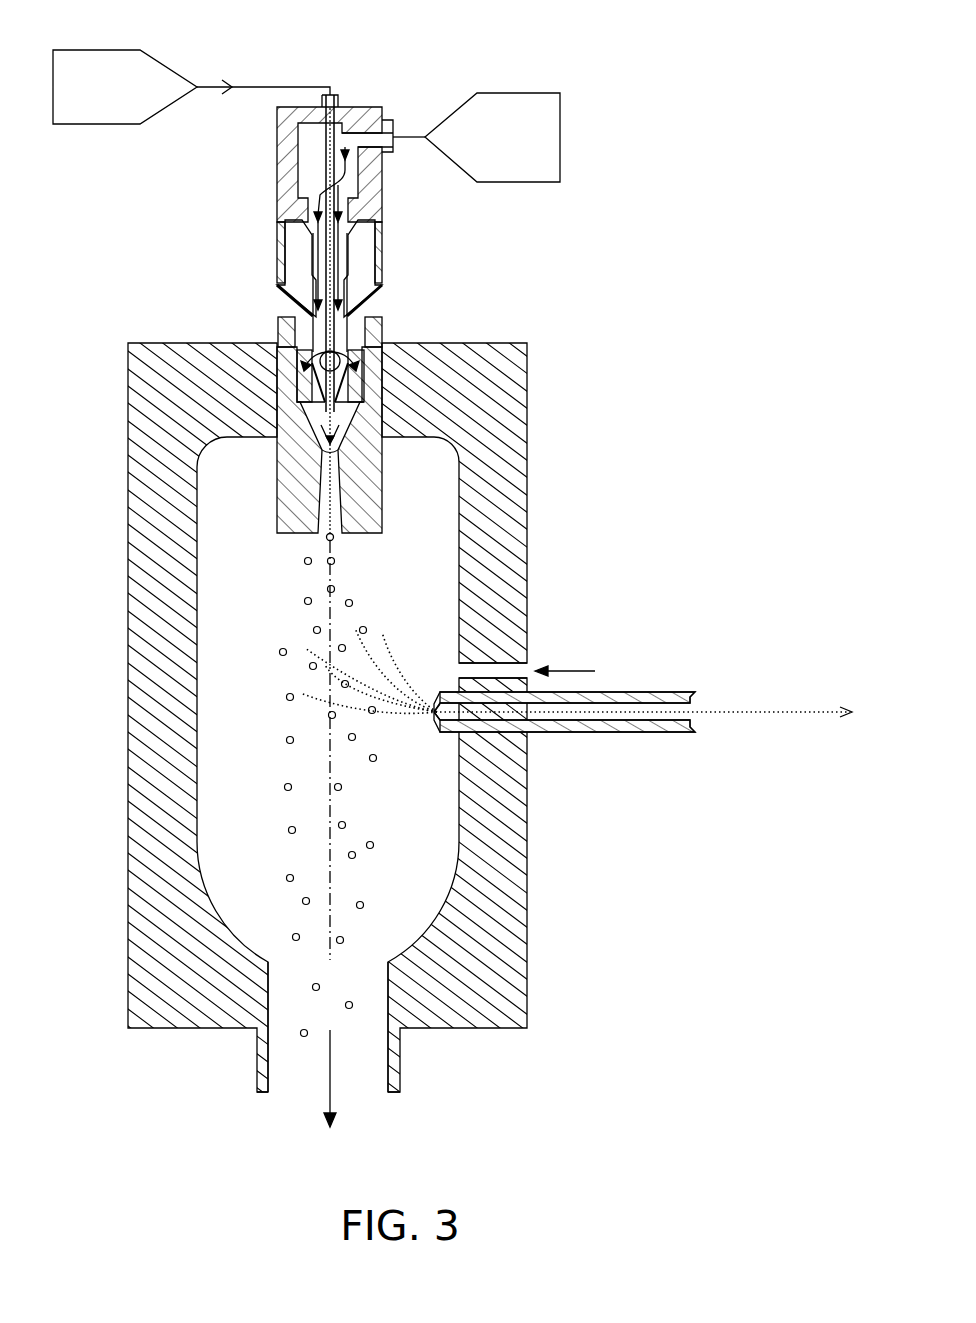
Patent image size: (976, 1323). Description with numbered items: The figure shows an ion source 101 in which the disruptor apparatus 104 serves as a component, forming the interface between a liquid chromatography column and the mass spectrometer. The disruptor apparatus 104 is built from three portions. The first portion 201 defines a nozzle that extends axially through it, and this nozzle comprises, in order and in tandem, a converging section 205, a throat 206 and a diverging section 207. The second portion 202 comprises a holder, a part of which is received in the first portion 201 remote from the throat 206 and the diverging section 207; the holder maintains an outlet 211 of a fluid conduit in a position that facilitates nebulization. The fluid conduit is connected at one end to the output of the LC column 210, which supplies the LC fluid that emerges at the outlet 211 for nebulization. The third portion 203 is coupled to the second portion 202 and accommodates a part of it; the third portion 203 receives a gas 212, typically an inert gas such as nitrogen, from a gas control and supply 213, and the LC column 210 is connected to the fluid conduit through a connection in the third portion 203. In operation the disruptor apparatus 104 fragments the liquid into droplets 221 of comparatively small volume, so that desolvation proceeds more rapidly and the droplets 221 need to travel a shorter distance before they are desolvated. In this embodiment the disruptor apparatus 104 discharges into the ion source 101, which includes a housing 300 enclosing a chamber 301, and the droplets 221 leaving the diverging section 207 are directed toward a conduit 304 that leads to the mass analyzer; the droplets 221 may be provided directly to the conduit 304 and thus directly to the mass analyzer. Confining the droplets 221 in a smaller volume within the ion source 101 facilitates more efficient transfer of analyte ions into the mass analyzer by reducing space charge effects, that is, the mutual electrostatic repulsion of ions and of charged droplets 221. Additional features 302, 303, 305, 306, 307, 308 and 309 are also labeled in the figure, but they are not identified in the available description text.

The ion source 101 is at (685, 257).
The disruptor apparatus 104 is at (418, 238).
The first portion 201 is at (322, 468).
The second portion 202 is at (277, 298).
The third portion 203 is at (277, 187).
The converging section 205 is at (331, 467).
The throat 206 is at (334, 438).
The diverging section 207 is at (322, 520).
The LC column 210 is at (88, 50).
The outlet 211 is at (334, 413).
The gas 212 is at (298, 390).
The gas control and supply 213 is at (518, 93).
The droplets 221 is at (334, 538).
The housing 300 is at (528, 393).
The chamber 301 is at (413, 628).
The exhaust passage 302 is at (331, 948).
The sampling tube/capillary to MS 303 is at (770, 711).
The conduit 304 is at (678, 726).
The gas flow through slot 305 is at (585, 671).
The ion spray plume 306 is at (390, 720).
The exhaust flow 307 is at (327, 1119).
The exhaust outlet tube 308 is at (293, 1092).
The wall slot 309 is at (470, 671).